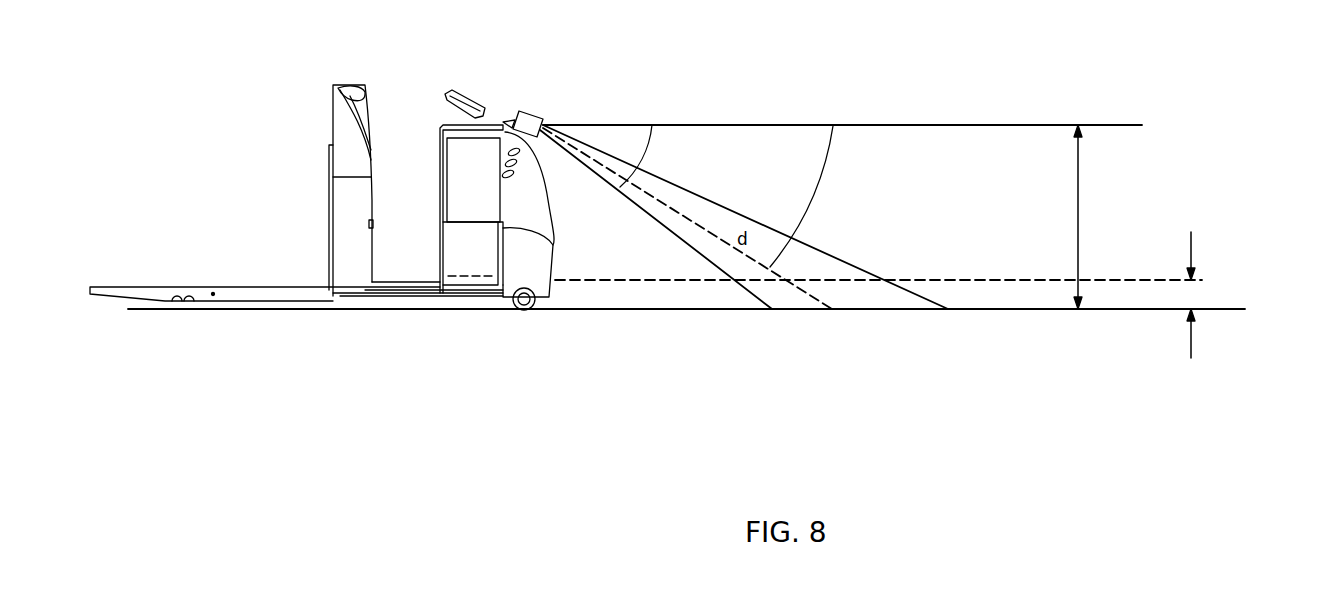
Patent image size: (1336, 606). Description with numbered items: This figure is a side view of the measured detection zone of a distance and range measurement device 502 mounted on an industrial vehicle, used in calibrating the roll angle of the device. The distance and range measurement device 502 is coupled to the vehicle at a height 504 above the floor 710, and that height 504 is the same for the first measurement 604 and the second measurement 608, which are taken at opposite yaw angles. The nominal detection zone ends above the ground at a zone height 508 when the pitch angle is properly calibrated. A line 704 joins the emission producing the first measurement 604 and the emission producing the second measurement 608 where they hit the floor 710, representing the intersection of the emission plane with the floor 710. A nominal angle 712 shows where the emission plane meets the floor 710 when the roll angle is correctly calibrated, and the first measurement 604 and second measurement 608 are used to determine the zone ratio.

The distance and range measurement device 502 is at (532, 122).
The height 504 is at (1079, 197).
The zone height 508 is at (1207, 297).
The first measurement 604 is at (697, 253).
The second measurement 608 is at (688, 192).
The line 704 is at (910, 310).
The floor 710 is at (1047, 310).
The nominal angle 712 is at (833, 205).